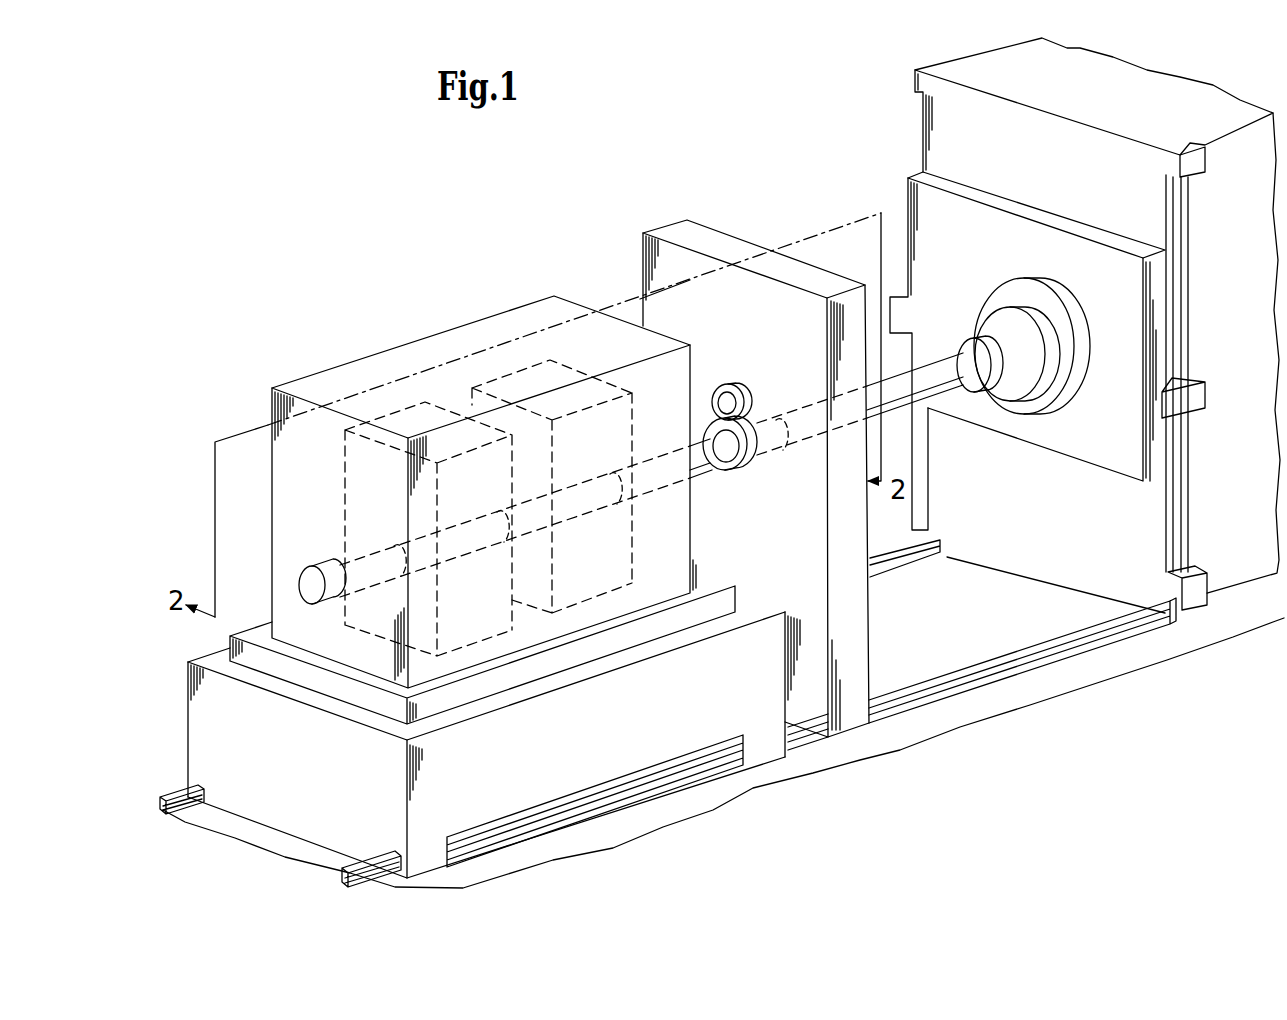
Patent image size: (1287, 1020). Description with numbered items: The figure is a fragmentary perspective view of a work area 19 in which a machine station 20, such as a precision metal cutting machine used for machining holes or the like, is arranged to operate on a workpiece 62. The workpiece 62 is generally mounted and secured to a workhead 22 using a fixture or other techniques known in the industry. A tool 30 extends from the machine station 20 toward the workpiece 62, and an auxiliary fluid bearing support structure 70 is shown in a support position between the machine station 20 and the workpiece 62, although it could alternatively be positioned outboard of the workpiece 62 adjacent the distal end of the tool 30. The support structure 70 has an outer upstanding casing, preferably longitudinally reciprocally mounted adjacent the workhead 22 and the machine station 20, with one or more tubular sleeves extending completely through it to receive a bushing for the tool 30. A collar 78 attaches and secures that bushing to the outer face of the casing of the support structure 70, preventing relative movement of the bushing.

The work area 19 is at (826, 170).
The machine station 20 is at (1204, 76).
The workhead 22 is at (208, 634).
The tool 30 is at (903, 402).
The workpiece 62 is at (297, 384).
The auxiliary fluid bearing support structure 70 is at (697, 198).
The collar 78 is at (741, 466).